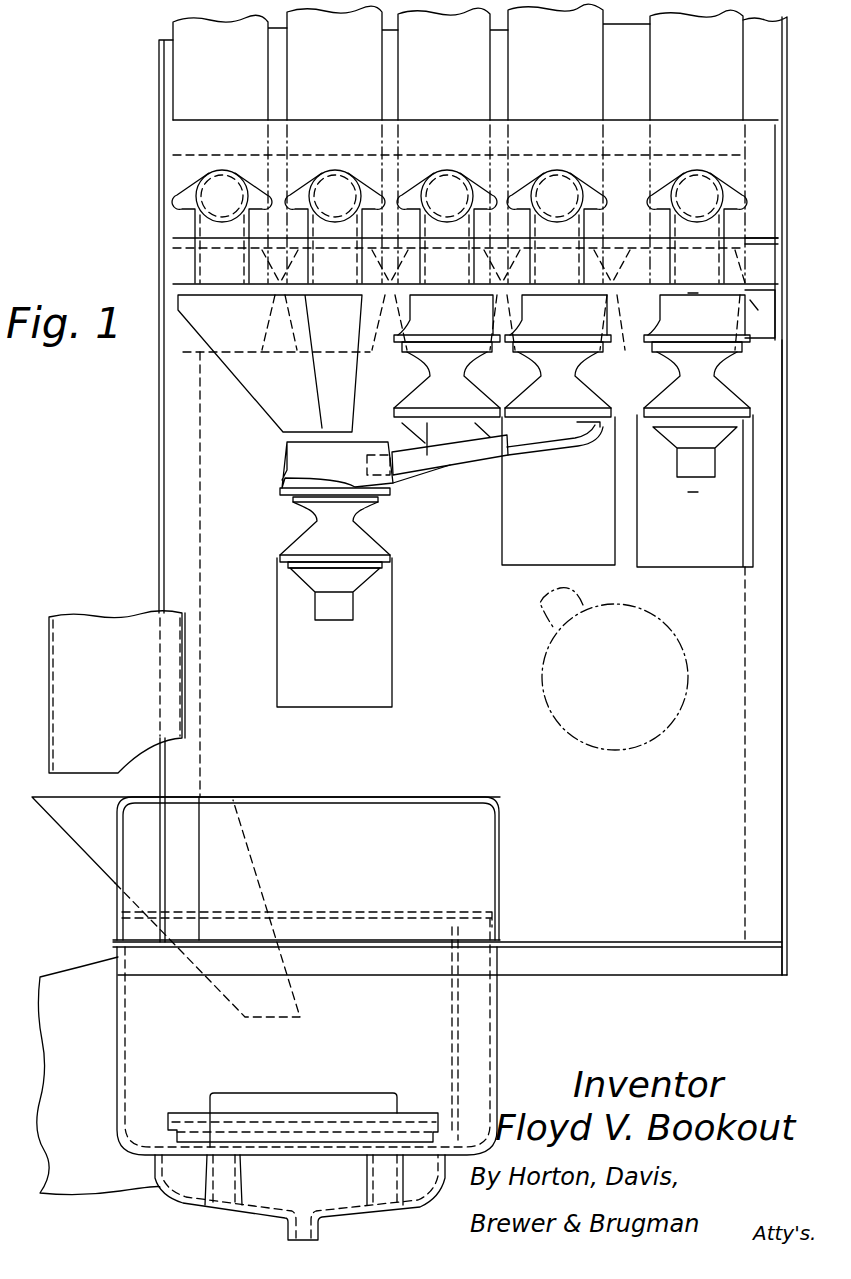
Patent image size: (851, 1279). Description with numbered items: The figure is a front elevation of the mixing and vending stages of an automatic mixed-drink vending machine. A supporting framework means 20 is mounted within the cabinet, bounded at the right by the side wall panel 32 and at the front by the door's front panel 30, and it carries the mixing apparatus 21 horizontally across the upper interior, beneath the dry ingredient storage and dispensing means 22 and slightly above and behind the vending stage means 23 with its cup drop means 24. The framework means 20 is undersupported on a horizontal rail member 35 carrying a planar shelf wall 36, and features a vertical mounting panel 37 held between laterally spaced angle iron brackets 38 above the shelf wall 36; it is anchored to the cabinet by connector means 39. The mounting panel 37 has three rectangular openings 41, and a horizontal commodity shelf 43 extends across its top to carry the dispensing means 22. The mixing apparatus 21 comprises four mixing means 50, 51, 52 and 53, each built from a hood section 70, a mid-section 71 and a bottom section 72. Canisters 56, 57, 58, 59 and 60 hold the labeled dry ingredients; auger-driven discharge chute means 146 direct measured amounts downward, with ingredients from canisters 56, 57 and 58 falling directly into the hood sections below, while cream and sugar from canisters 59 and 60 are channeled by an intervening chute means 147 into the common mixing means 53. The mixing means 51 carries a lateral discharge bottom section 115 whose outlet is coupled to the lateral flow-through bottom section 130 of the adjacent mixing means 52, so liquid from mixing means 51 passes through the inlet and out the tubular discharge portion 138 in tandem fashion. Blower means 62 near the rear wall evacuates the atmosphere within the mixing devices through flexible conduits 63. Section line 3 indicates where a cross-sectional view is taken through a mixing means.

The section line 3- 3 is at (698, 300).
The supporting framework means 20 is at (153, 465).
The mixing apparatus 21 is at (457, 484).
The dry ingredient storage and dispensing means 22 is at (141, 28).
The vending stage means 23 is at (510, 868).
The cup drop means 24 is at (42, 609).
The front panel 30 is at (75, 1165).
The right-hand side wall panel 32 is at (785, 440).
The horizontal rail member 35 is at (625, 965).
The planar shelf wall 36 is at (682, 940).
The mounting panel 37 is at (500, 750).
The angle iron brackets 38 is at (200, 723).
The connector means 39 is at (778, 327).
The rectangular shaped openings 41 is at (392, 672).
The horizontal commodity shelf 43 is at (773, 250).
The mixing means 50 is at (740, 389).
The mixing means 51 is at (607, 397).
The mixing means 52 is at (495, 398).
The mixing means 53 is at (296, 517).
The canister 56 is at (709, 55).
The canister 57 is at (567, 51).
The canister 58 is at (456, 53).
The canister 59 is at (346, 53).
The canister 60 is at (233, 55).
The blower means 62 is at (690, 641).
The flexible conduits 63 is at (543, 605).
The hood section 70 is at (463, 331).
The mid-section 71 is at (417, 395).
The bottom section 72 is at (285, 584).
The lateral discharge bottom section 115 is at (566, 448).
The lateral flow-through bottom section 130 is at (485, 472).
The tubular discharge portion 138 is at (407, 463).
The discharge chute means 146 is at (203, 224).
The chute means 147 is at (252, 390).